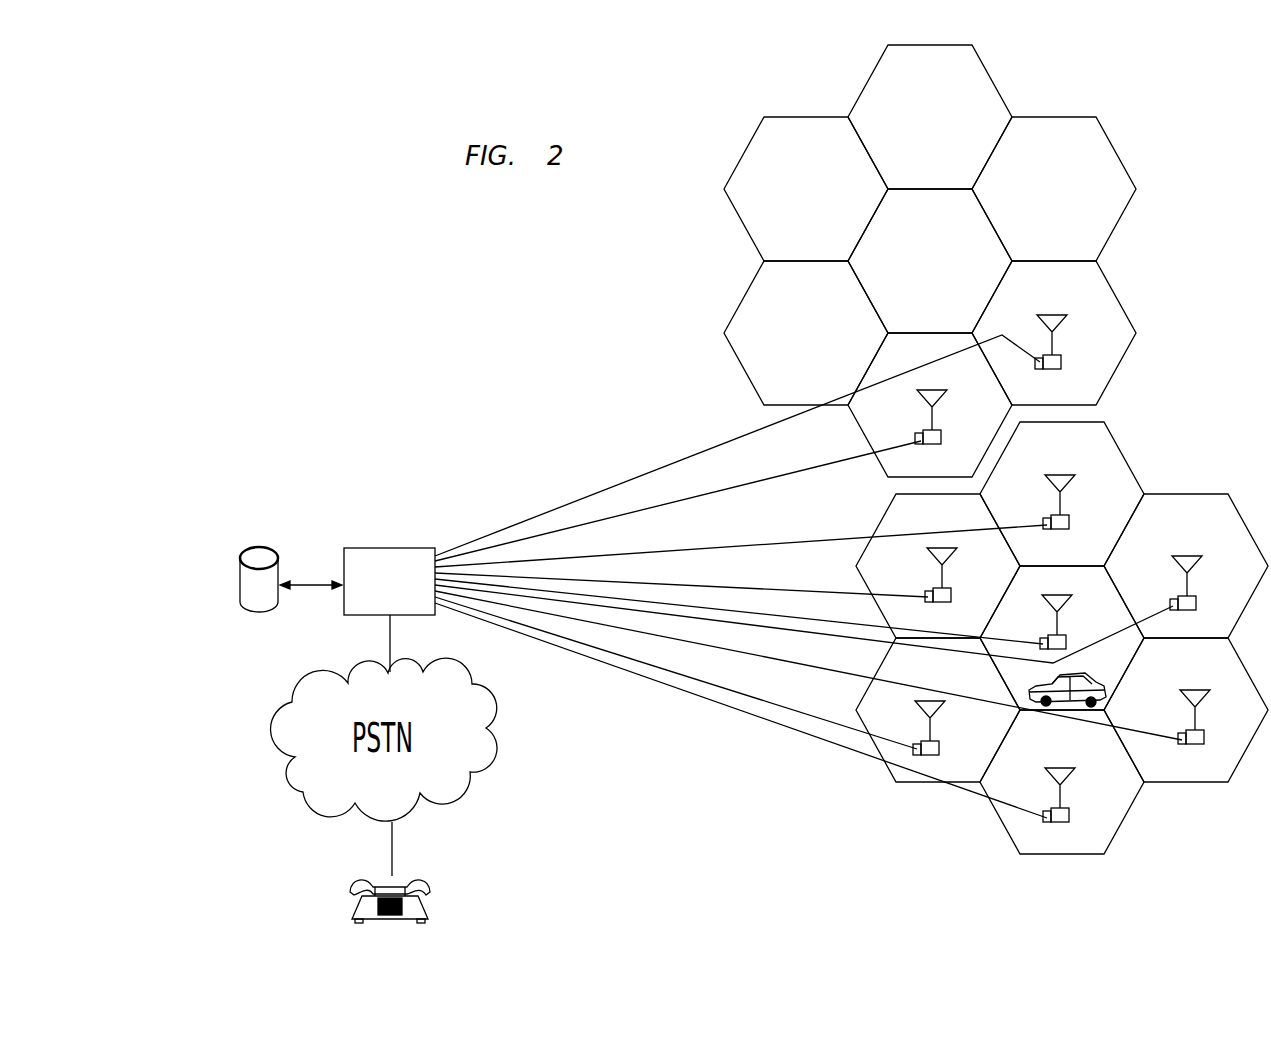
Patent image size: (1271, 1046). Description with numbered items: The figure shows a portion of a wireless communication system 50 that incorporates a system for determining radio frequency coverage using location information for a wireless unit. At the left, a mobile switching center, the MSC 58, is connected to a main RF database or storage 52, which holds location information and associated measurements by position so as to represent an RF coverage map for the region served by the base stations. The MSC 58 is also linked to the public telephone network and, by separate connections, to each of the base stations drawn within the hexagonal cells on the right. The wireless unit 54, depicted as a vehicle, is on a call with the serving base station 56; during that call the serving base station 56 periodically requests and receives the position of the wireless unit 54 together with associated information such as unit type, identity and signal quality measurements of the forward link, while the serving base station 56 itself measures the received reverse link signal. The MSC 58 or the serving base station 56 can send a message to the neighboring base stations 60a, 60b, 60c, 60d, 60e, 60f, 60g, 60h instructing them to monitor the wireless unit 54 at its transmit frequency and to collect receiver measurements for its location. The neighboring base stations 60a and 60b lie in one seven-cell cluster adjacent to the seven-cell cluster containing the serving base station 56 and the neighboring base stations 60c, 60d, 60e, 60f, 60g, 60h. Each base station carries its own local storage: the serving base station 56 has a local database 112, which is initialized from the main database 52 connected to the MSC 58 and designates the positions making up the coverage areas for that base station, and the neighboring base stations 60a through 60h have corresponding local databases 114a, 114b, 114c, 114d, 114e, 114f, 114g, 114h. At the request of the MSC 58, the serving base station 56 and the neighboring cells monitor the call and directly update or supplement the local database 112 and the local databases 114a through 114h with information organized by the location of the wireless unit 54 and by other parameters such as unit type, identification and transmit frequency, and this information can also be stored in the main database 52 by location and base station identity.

The wireless communication system 50 is at (532, 253).
The RF database 52 is at (262, 546).
The wireless unit 54 is at (1080, 680).
The serving base station 56 is at (1066, 634).
The MSC 58 is at (390, 547).
The neighboring base station 60a is at (1062, 356).
The neighboring base station 60b is at (941, 430).
The neighboring base station 60c is at (950, 588).
The neighboring base station 60d is at (940, 742).
The neighboring base station 60e is at (1069, 808).
The neighboring base station 60f is at (1204, 729).
The neighboring base station 60g is at (1196, 596).
The neighboring base station 60h is at (1069, 514).
The local database 112 is at (1045, 638).
The local database 114a is at (1039, 371).
The local database 114b is at (923, 430).
The local database 114c is at (932, 588).
The local database 114d is at (928, 756).
The local database 114e is at (1054, 822).
The local database 114f is at (1182, 732).
The local database 114g is at (1175, 598).
The local database 114h is at (1048, 532).